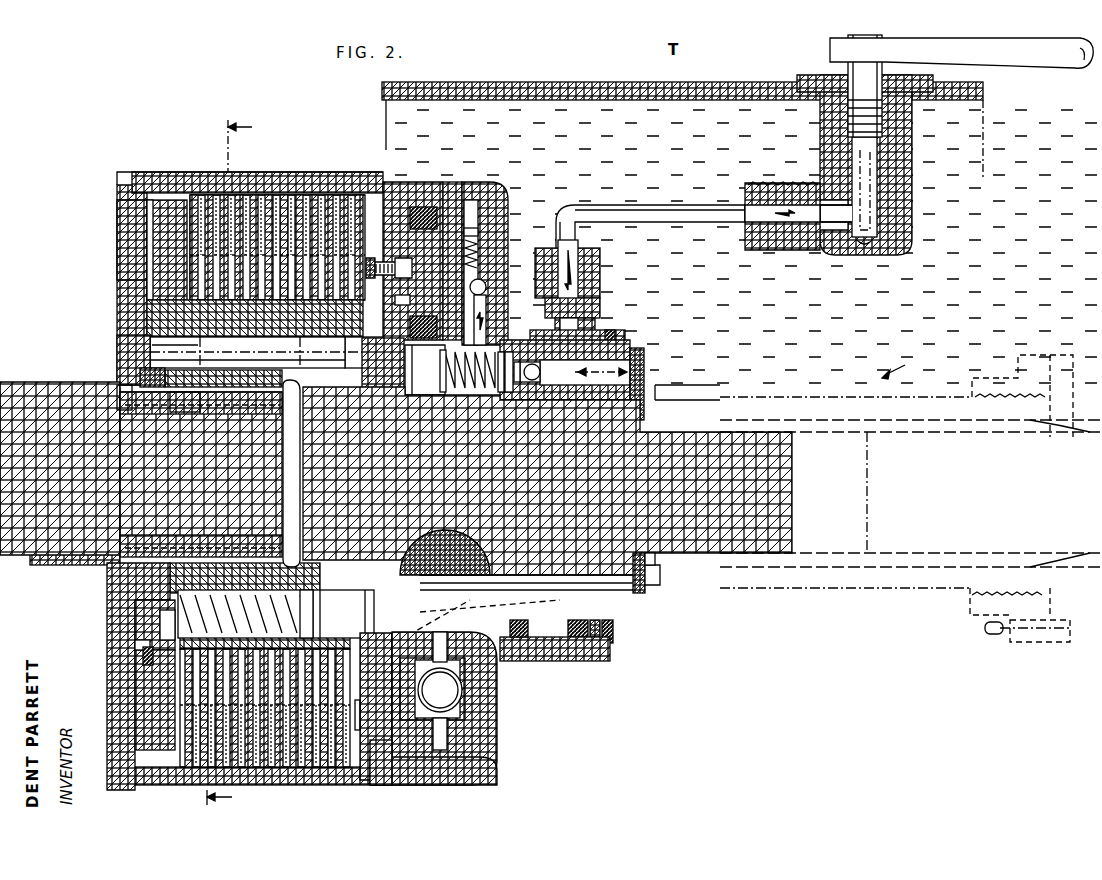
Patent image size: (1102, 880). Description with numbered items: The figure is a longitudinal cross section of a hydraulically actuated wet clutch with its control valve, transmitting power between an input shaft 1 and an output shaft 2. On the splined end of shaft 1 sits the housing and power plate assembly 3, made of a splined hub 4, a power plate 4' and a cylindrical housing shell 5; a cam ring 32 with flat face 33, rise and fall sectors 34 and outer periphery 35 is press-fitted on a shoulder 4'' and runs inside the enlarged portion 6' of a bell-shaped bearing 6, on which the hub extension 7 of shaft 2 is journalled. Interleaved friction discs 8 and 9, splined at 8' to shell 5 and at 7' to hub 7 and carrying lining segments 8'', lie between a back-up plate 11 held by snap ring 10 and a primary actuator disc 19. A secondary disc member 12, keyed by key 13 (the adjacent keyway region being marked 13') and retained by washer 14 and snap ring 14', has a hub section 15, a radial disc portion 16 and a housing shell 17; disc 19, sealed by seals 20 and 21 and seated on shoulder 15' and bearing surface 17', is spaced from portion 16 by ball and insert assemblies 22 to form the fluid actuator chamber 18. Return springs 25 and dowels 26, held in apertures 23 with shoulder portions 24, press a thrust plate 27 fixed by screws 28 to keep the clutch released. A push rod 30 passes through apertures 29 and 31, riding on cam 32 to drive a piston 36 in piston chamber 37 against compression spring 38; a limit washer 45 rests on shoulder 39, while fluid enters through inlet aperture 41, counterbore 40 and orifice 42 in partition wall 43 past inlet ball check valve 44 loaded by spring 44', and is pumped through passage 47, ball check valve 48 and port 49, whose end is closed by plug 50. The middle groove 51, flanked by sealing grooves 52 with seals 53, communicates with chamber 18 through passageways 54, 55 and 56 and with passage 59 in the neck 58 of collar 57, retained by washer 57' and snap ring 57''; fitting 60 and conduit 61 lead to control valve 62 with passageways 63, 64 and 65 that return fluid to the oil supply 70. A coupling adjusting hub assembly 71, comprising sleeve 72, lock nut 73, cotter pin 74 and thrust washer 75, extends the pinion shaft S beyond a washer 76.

The power input shaft 1 is at (60, 468).
The power output shaft 2 is at (547, 481).
The housing and power plate assembly 3 is at (82, 292).
The splined hub 4 is at (210, 473).
The power plate 4' is at (106, 240).
The shoulder 4'' is at (201, 526).
The cylindrical housing shell 5 is at (300, 172).
The bearing 6 is at (177, 427).
The enlarged portion of bearing 6' is at (115, 625).
The hub extension 7 is at (212, 474).
The inner spline 7' is at (348, 484).
The friction discs 8 is at (277, 219).
The outer spline 8' is at (284, 219).
The bonded lining segments 8'' is at (131, 245).
The friction discs 9 is at (226, 192).
The snap ring 10 is at (143, 660).
The back-up or pressure plate 11 is at (165, 246).
The secondary disc member 12 is at (505, 742).
The key 13 is at (458, 552).
The passage 13' is at (530, 559).
The washer 14 is at (656, 599).
The snap ring 14' is at (675, 595).
The hub section 15 is at (291, 648).
The shoulder 15' is at (390, 308).
The radial disc portion 16 is at (490, 705).
The housing shell 17 is at (433, 784).
The bearing surface 17' is at (395, 774).
The fluid actuator chamber 18 is at (455, 235).
The primary actuator disc 19 is at (400, 205).
The inner seal 20 is at (425, 318).
The outer seal 21 is at (425, 215).
The self-energizing ball and insert assemblies 22 is at (448, 688).
The apertures 23 is at (330, 590).
The reduced shoulder portion 24 is at (150, 605).
The return springs 25 is at (150, 644).
The thrust pins or dowels 26 is at (345, 590).
The thrust plate 27 is at (400, 268).
The screws 28 is at (385, 288).
The aperture 29 is at (330, 395).
The push rod 30 is at (267, 352).
The aperture 31 is at (130, 405).
The cam ring 32 is at (140, 350).
The flat face 33 is at (150, 580).
The rise and fall sectors 34 is at (150, 380).
The outer periphery of cam ring 35 is at (150, 628).
The piston 36 is at (405, 395).
The piston chamber 37 is at (448, 395).
The compression spring 38 is at (500, 392).
The shoulder 39 is at (528, 382).
The counterbore 40 is at (535, 390).
The inlet aperture 41 is at (635, 362).
The orifice 42 is at (636, 405).
The partition wall 43 is at (560, 388).
The inlet ball check valve 44 is at (534, 399).
The spring 44' is at (516, 396).
The limit or stop washer 45 is at (500, 372).
The fluid passage 47 is at (487, 307).
The ball check valve 48 is at (481, 257).
The orifice or port 49 is at (462, 245).
The adjustable threaded plug 50 is at (490, 202).
The middle groove 51 is at (590, 328).
The sealing grooves 52 is at (520, 640).
The quad-ring seals 53 is at (615, 328).
The fluid passageway 54 is at (630, 590).
The fluid passageway 55 is at (480, 625).
The fluid passageway 56 is at (440, 610).
The collar 57 is at (620, 491).
The washer 57' is at (616, 651).
The snap ring 57'' is at (641, 642).
The neck portion 58 is at (595, 262).
The fluid passage 59 is at (590, 300).
The threaded conduit connecting fitting 60 is at (600, 262).
The hydraulic fluid conduit 61 is at (592, 205).
The operating pressure control valve 62 is at (790, 140).
The passageway 63 is at (812, 240).
The passageway 64 is at (880, 208).
The passageway 65 is at (900, 150).
The oil supply 70 is at (613, 144).
The coupling adjusting hub assembly 71 is at (909, 373).
The coupling adjusting sleeve 72 is at (825, 397).
The flanged lock nut 73 is at (975, 620).
The cotter pin 74 is at (990, 634).
The thrust washer 75 is at (1050, 642).
The washer 76 is at (690, 390).
The shaft S is at (910, 493).